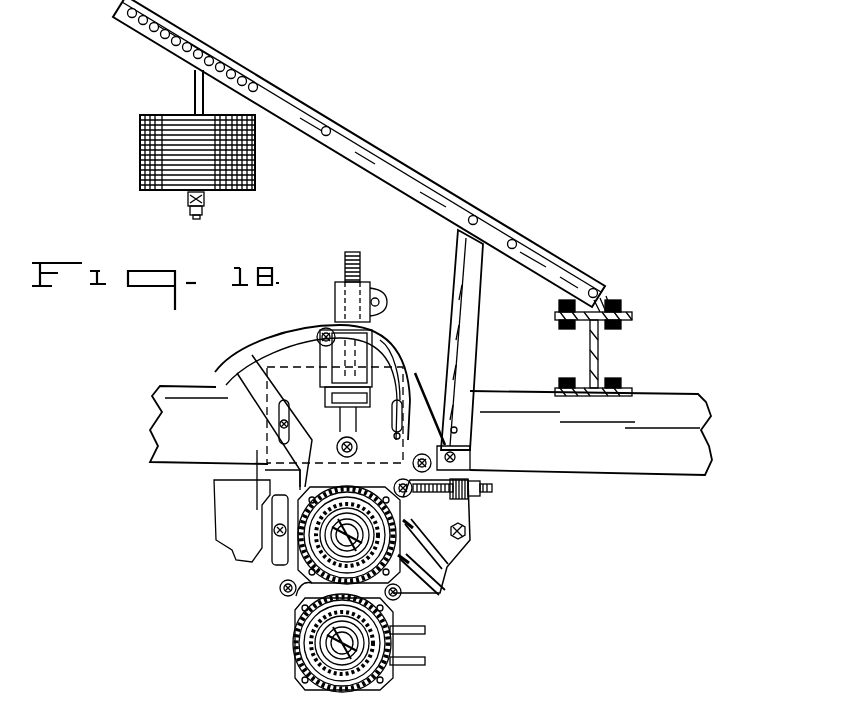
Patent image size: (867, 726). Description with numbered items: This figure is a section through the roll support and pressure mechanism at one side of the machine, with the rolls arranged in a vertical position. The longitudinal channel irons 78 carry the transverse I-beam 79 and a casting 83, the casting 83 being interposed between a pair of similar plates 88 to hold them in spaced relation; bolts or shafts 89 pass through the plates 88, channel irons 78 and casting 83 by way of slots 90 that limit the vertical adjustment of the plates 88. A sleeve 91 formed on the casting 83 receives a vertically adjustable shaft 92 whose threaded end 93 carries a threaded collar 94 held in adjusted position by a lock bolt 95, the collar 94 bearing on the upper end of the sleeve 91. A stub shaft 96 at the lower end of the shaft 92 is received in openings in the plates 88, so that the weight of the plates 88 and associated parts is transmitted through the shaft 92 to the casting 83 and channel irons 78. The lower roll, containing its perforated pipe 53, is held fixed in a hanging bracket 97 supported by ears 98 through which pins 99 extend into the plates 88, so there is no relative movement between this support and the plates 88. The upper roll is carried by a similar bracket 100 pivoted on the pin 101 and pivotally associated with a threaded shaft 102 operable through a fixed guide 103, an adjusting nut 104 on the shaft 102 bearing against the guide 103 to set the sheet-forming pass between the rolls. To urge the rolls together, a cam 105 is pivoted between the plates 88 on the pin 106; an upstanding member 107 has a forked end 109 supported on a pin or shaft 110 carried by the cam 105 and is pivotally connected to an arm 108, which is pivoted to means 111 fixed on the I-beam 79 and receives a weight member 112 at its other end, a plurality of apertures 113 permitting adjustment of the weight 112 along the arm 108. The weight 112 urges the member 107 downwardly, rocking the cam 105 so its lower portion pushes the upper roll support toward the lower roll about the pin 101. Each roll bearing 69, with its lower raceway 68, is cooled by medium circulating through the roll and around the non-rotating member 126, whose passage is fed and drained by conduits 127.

The perforated pipe 53 is at (306, 652).
The lower raceway 68 is at (320, 666).
The bearing 69 is at (325, 641).
The channel iron 78 is at (678, 402).
The transverse I-beam 79 is at (598, 355).
The casting 83 is at (285, 338).
The plate 88 is at (417, 373).
The bolt or shaft 89 is at (280, 426).
The slot 90 is at (276, 565).
The sleeve 91 is at (368, 335).
The vertically adjustable shaft 92 is at (325, 373).
The threaded end 93 is at (360, 262).
The threaded collar 94 is at (335, 292).
The lock bolt 95 is at (378, 300).
The stub shaft 96 is at (335, 450).
The hanging bracket 97 is at (285, 585).
The ear 98 is at (335, 625).
The pin 99 is at (290, 600).
The bracket 100 is at (382, 490).
The pin 101 is at (405, 600).
The threaded shaft 102 is at (465, 512).
The guide 103 is at (462, 486).
The adjusting nut 104 is at (482, 492).
The cam 105 is at (455, 470).
The pin 106 is at (410, 460).
The upstanding member 107 is at (468, 312).
The arm 108 is at (488, 230).
The forked end 109 is at (462, 440).
The pin or shaft 110 is at (456, 455).
The pivot means 111 is at (603, 304).
The weight member 112 is at (140, 142).
The aperture 113 is at (215, 62).
The member 126 is at (392, 668).
The conduit 127 is at (447, 568).